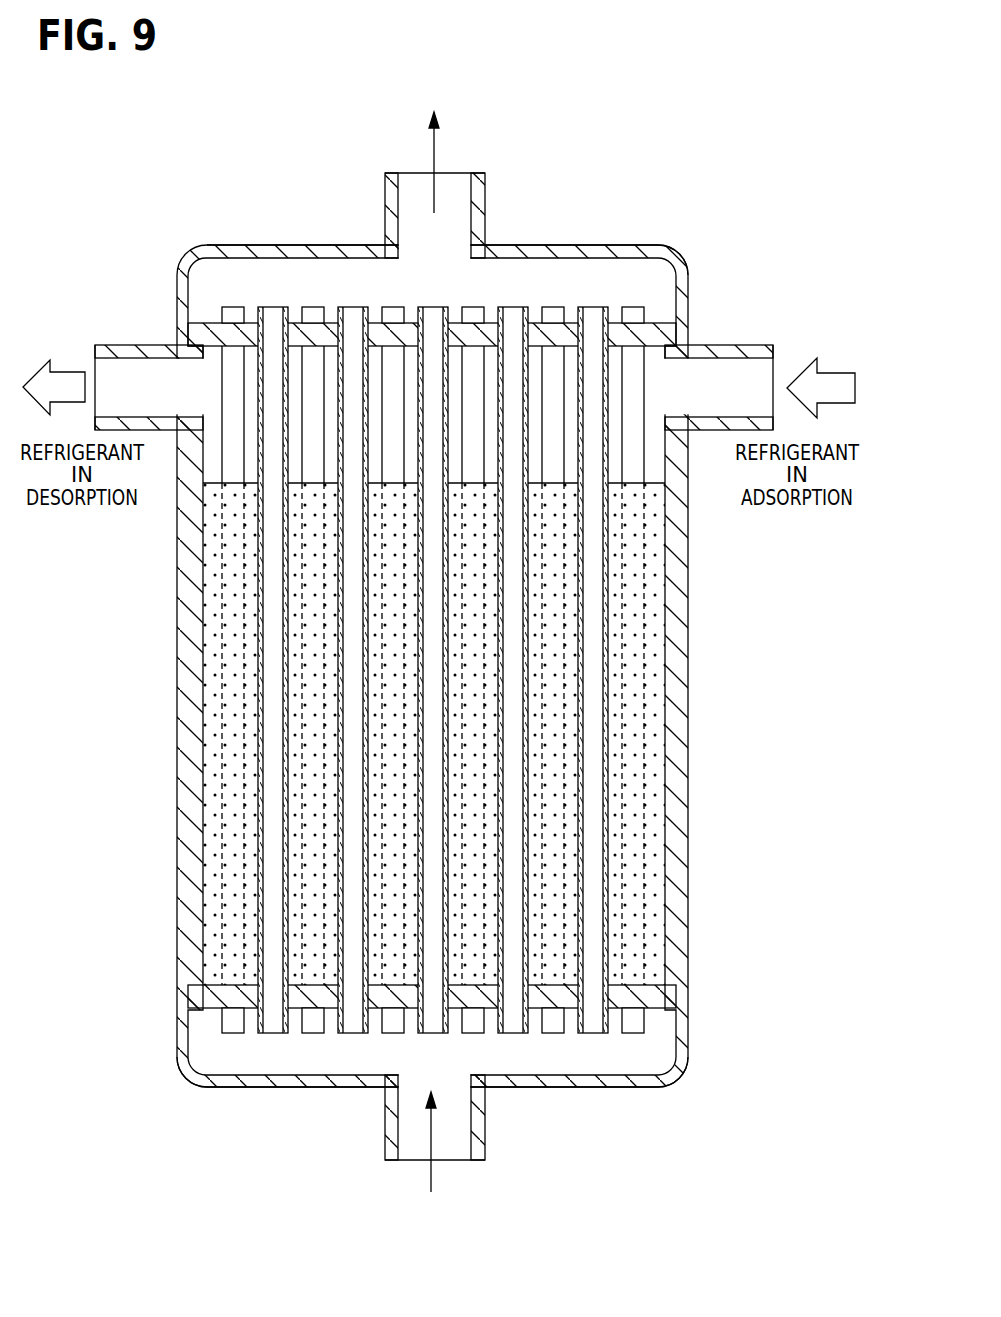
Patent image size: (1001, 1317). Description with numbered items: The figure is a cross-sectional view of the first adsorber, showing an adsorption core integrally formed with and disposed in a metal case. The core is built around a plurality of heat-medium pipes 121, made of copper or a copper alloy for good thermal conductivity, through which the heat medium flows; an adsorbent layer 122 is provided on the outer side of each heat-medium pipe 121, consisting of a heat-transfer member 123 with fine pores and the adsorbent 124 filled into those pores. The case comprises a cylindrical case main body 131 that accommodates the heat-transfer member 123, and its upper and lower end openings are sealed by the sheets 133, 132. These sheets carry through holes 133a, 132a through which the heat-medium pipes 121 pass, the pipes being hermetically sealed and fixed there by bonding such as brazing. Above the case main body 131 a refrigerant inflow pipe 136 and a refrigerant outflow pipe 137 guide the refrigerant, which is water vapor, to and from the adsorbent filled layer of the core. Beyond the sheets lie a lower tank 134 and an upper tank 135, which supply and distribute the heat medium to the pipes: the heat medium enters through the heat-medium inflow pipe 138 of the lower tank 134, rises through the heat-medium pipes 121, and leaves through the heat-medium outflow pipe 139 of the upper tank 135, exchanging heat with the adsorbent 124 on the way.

The heat-medium pipe 121 is at (265, 306).
The adsorbent layer 122 is at (205, 712).
The heat-transfer member 123 is at (205, 797).
The adsorbent 124 is at (205, 853).
The case main body 131 is at (680, 660).
The sheet 132 is at (691, 996).
The through hole 132a is at (592, 1018).
The sheet 133 is at (660, 322).
The through hole 133a is at (594, 320).
The lower tank 134 is at (529, 1088).
The upper tank 135 is at (589, 244).
The refrigerant inflow pipe 136 is at (713, 343).
The refrigerant outflow pipe 137 is at (152, 343).
The heat-medium inflow pipe 138 is at (384, 1124).
The heat-medium outflow pipe 139 is at (478, 195).